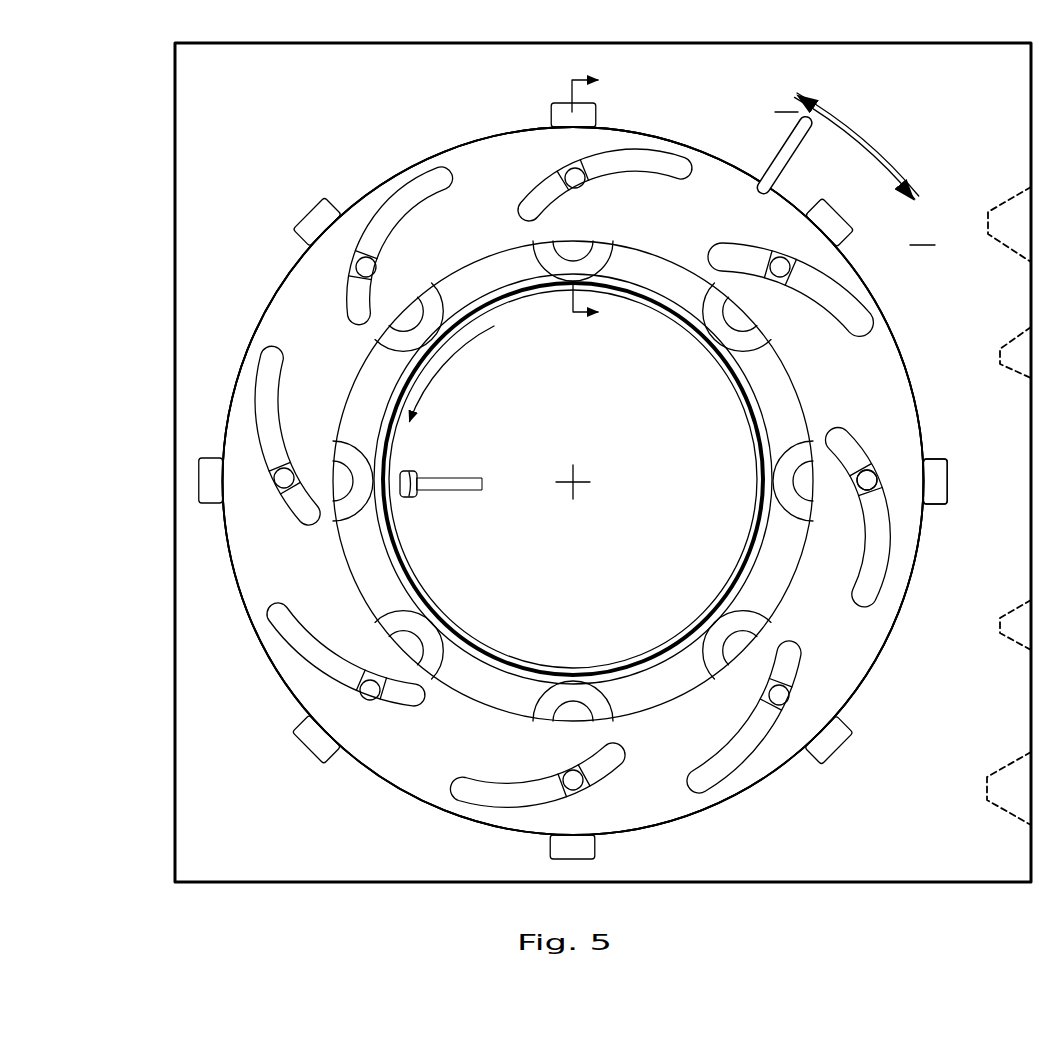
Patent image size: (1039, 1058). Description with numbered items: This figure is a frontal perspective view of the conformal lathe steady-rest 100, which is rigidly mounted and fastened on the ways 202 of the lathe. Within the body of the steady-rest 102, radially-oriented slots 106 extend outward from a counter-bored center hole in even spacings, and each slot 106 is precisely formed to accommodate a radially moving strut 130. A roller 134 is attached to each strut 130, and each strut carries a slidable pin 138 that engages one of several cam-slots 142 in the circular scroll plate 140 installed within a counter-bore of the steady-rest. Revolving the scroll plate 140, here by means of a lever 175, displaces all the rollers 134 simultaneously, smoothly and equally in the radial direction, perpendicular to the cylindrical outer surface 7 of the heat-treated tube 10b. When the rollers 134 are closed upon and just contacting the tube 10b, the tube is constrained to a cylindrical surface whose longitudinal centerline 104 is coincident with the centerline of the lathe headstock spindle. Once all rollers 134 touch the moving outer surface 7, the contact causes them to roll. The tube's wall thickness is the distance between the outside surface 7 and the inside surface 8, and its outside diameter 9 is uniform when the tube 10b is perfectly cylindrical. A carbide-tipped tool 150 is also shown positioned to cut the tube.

The conformal lathe steady-rest 100 is at (125, 162).
The body of the steady-rest 102 is at (291, 116).
The longitudinal centerline 104 is at (583, 504).
The radially-oriented slots 106 is at (944, 488).
The strut 130 is at (929, 506).
The roller 134 is at (743, 342).
The slidable pin 138 is at (878, 474).
The scroll plate 140 is at (900, 622).
The cam-slot 142 is at (873, 607).
The tool 150 is at (449, 497).
The lever 175 is at (802, 148).
The ways 202 is at (986, 795).
The outside surface 7 is at (495, 673).
The inside surface 8 is at (507, 655).
The outside diameter 9 is at (596, 198).
The cylindrical tube 10b is at (377, 596).